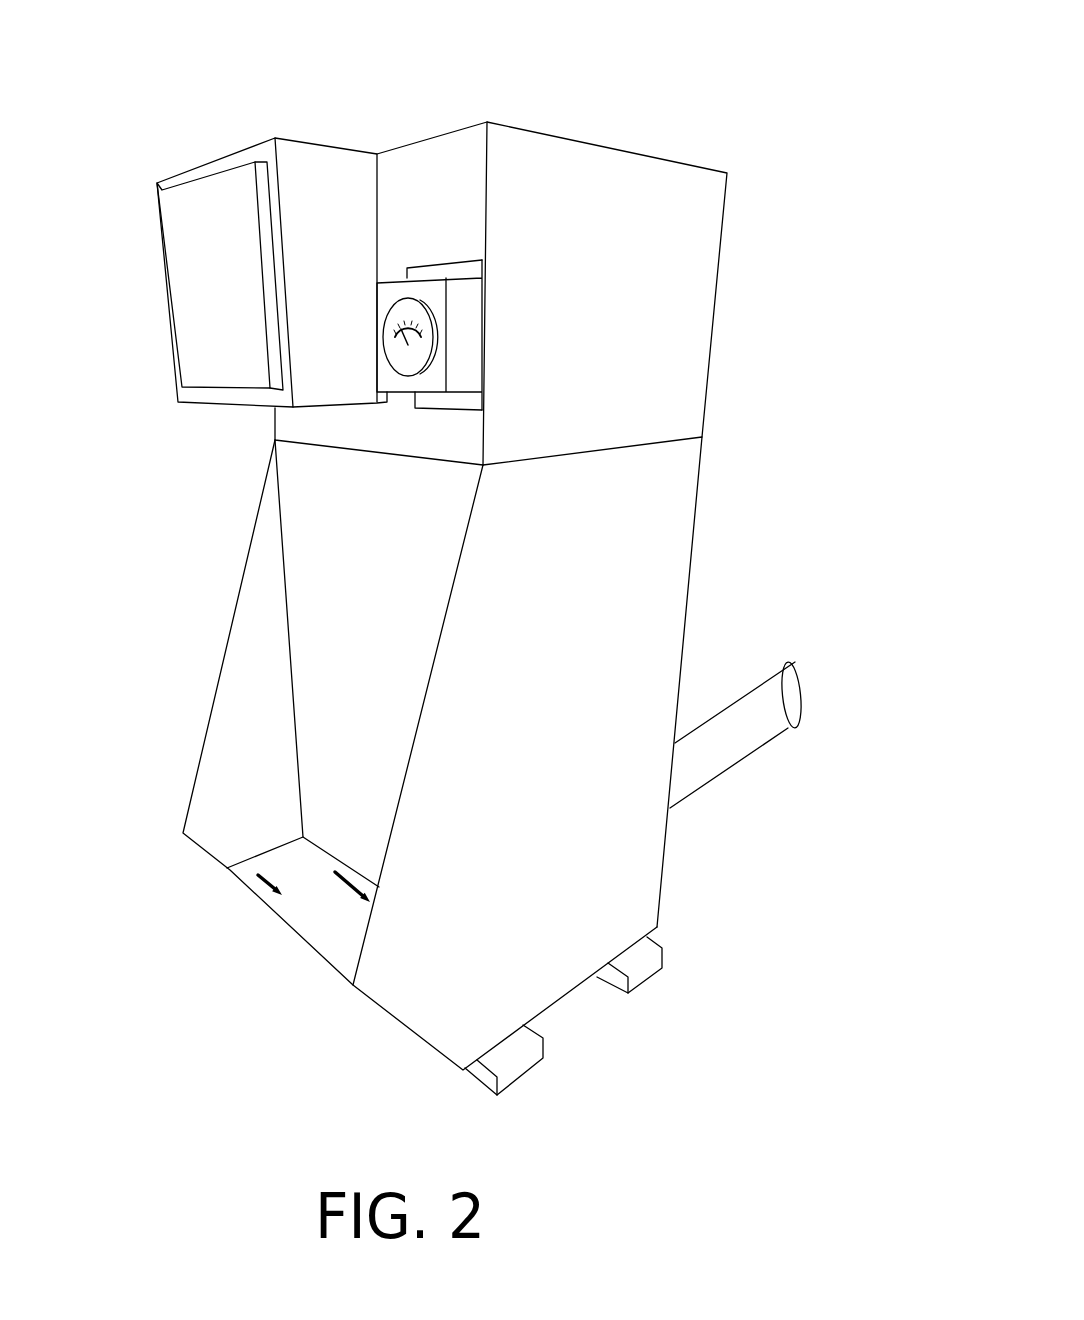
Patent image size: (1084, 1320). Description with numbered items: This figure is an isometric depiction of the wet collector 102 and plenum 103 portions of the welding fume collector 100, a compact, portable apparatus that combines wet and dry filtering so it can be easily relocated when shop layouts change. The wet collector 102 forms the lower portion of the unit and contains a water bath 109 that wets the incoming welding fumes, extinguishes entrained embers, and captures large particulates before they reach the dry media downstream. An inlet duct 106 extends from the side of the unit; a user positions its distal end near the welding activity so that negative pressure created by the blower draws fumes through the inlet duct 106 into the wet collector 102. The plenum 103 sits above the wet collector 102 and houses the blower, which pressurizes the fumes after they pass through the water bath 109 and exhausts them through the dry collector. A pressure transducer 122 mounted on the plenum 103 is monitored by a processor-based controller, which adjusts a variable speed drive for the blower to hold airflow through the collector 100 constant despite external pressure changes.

The welding fume collector 100 is at (380, 114).
The wet collector 102 is at (172, 645).
The plenum 103 is at (763, 329).
The inlet duct 106 is at (728, 740).
The water bath 109 is at (252, 870).
The pressure transducer 122 is at (408, 358).